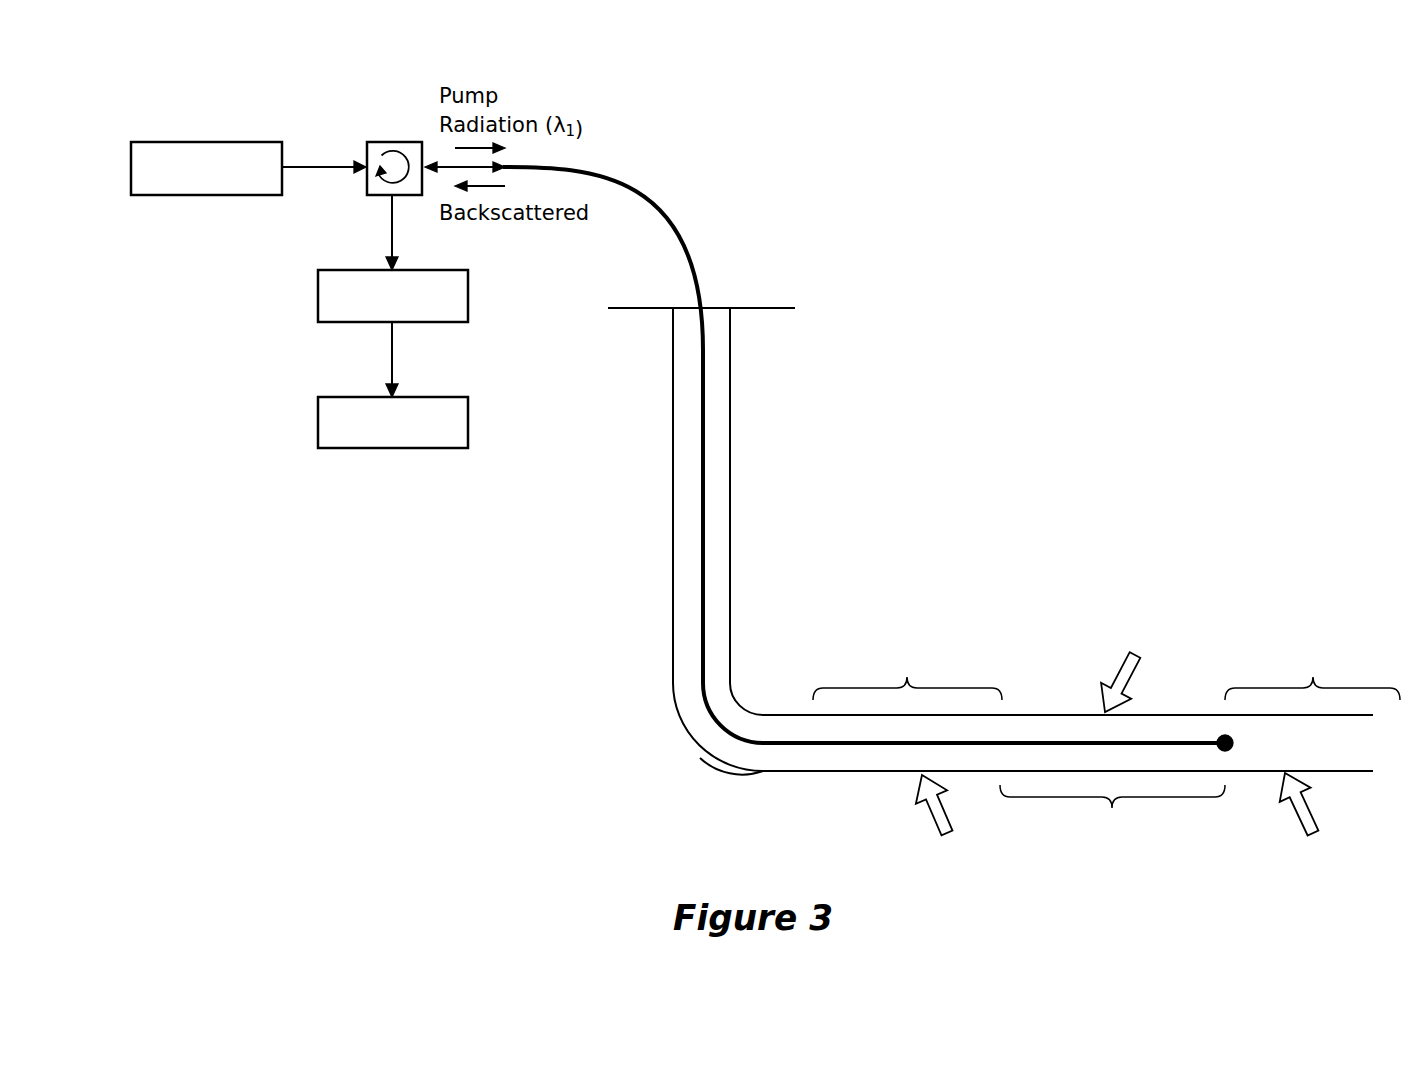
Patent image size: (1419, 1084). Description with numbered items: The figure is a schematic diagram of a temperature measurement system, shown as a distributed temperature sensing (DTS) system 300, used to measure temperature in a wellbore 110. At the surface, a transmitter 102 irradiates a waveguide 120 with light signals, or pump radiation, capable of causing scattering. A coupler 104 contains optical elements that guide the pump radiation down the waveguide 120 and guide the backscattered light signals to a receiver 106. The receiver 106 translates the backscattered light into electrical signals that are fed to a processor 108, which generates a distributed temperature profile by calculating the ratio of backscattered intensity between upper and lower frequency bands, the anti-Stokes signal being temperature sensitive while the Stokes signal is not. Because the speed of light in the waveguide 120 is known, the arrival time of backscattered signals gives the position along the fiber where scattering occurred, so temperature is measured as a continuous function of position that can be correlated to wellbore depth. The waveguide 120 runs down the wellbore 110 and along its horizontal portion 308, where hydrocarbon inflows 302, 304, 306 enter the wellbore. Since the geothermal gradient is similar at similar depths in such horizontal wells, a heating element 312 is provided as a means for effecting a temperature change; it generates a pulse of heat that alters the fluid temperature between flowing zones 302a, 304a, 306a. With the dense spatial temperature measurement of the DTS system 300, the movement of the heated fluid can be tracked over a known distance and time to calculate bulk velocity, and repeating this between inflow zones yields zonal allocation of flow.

The transmitter 102 is at (163, 140).
The coupler 104 is at (380, 142).
The receiver 106 is at (351, 268).
The processor 108 is at (350, 395).
The wellbore 110 is at (683, 434).
The waveguide 120 is at (665, 212).
The distributed temperature sensing (DTS) system 300 is at (681, 86).
The hydrocarbon inflow 302 is at (934, 827).
The flowing zone 302a is at (907, 674).
The hydrocarbon inflow 304 is at (1122, 657).
The flowing zone 304a is at (1112, 811).
The hydrocarbon inflow 306 is at (1297, 830).
The flowing zone 306a is at (1312, 674).
The horizontal portion 308 is at (779, 773).
The heating element 312 is at (1219, 738).